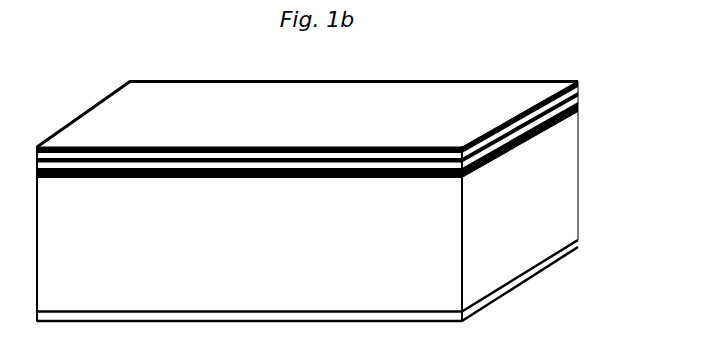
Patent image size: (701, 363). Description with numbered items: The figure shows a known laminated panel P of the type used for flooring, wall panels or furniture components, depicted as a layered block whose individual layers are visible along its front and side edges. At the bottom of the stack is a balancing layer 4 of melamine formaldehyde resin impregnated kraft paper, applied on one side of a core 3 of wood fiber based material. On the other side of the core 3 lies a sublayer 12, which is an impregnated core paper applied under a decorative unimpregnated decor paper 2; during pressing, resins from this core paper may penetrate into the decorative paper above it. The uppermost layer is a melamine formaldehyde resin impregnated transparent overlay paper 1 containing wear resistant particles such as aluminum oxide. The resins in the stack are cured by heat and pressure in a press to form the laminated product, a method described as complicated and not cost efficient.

The laminated panel P is at (92, 84).
The transparent overlay paper 1 is at (581, 87).
The decor paper 2 is at (581, 98).
The sublayer 12 is at (560, 120).
The core 3 is at (572, 193).
The balancing layer 4 is at (580, 244).